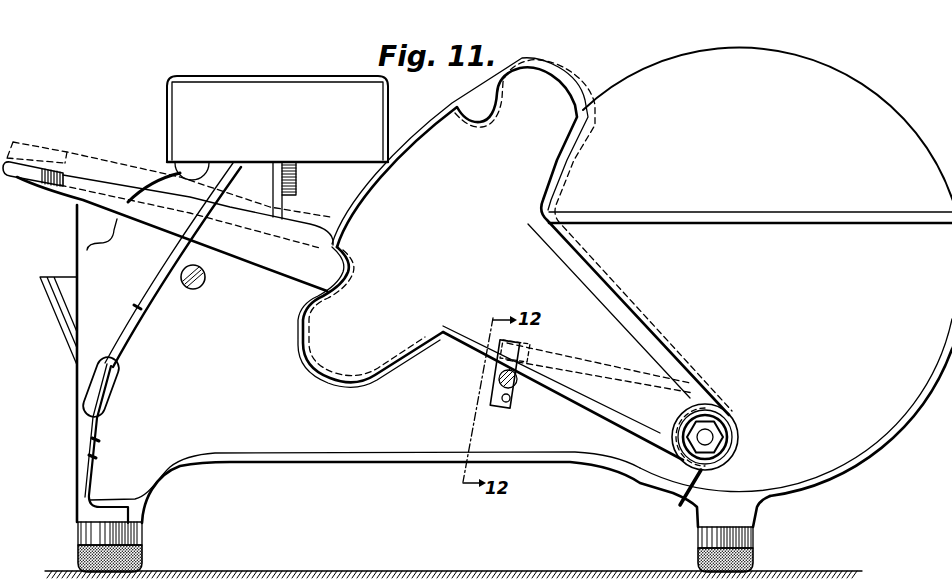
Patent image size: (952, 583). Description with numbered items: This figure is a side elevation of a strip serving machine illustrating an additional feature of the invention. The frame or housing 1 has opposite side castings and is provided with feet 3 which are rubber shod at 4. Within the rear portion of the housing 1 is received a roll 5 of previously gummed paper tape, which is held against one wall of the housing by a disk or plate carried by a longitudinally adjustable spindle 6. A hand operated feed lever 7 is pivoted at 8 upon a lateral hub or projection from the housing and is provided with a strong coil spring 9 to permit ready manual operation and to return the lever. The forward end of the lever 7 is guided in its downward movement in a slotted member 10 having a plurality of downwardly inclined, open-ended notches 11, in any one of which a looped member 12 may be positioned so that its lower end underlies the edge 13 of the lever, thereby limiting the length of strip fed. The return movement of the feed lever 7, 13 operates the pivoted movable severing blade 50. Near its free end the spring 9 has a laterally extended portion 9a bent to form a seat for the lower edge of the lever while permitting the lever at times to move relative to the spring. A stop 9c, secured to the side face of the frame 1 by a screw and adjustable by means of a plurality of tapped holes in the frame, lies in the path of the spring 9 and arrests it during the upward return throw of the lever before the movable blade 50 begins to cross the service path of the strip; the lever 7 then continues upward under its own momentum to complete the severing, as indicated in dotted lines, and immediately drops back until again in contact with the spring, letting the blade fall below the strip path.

The frame or housing 1 is at (876, 425).
The feet 3 is at (142, 535).
The rubber shoes 4 is at (142, 559).
The roll of gummed paper tape 5 is at (877, 119).
The spindle 6 is at (32, 197).
The feed lever 7 is at (600, 306).
The pivot 8 is at (712, 438).
The coil spring 9 is at (584, 363).
The laterally extended portion 9a is at (490, 357).
The stop 9c is at (512, 401).
The slotted member 10 is at (155, 286).
The notches 11 is at (146, 309).
The looped member 12 is at (125, 388).
The edge of the lever 13 is at (157, 231).
The movable blade 50 is at (273, 186).